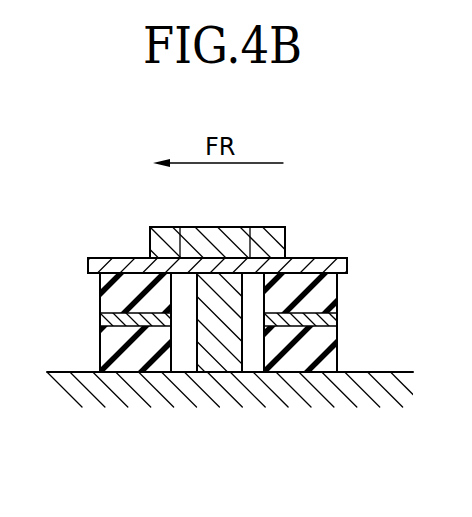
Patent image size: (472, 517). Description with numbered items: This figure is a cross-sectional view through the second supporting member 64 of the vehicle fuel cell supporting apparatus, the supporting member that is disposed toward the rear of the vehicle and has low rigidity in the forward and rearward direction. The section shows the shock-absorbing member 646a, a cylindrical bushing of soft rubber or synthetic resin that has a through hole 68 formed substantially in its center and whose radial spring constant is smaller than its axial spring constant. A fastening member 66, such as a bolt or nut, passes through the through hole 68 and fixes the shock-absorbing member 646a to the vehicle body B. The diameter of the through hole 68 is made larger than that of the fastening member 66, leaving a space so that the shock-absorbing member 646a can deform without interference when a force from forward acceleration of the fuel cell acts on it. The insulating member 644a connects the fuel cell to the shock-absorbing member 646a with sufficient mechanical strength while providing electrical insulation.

The second supporting member 64 is at (222, 332).
The fastening member 66 is at (214, 283).
The through hole 68 is at (255, 355).
The insulating member 644a is at (320, 320).
The shock-absorbing member 646a is at (320, 295).
The vehicle body B is at (348, 385).